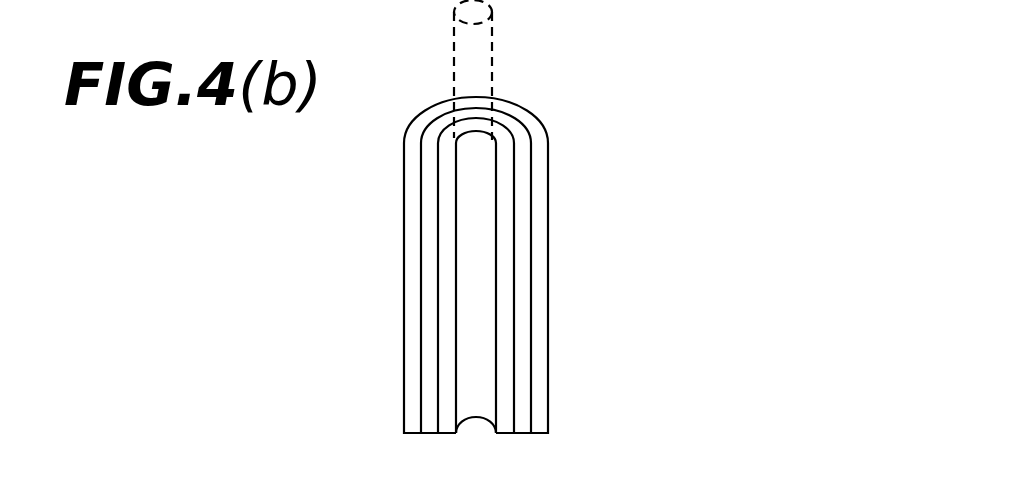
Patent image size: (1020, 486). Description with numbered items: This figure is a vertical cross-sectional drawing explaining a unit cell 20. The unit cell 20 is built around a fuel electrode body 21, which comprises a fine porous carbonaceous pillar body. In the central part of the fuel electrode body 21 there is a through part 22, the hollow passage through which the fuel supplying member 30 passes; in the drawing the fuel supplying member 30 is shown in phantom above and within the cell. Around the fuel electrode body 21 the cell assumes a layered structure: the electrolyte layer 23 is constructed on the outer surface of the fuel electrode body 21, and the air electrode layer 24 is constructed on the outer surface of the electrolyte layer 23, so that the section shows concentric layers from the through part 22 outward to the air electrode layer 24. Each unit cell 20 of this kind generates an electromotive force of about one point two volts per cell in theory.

The unit cell 20 is at (566, 251).
The fuel electrode body 21 is at (502, 136).
The through part 22 is at (478, 147).
The electrolyte layer 23 is at (518, 207).
The air electrode layer 24 is at (541, 390).
The fuel supplying member 30 is at (477, 42).